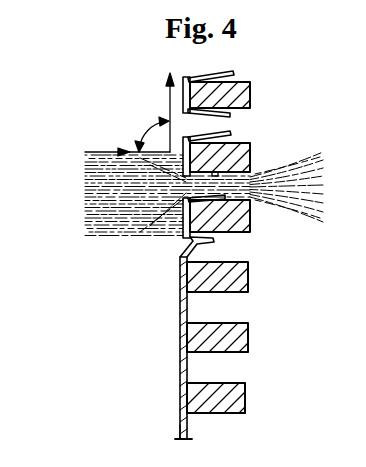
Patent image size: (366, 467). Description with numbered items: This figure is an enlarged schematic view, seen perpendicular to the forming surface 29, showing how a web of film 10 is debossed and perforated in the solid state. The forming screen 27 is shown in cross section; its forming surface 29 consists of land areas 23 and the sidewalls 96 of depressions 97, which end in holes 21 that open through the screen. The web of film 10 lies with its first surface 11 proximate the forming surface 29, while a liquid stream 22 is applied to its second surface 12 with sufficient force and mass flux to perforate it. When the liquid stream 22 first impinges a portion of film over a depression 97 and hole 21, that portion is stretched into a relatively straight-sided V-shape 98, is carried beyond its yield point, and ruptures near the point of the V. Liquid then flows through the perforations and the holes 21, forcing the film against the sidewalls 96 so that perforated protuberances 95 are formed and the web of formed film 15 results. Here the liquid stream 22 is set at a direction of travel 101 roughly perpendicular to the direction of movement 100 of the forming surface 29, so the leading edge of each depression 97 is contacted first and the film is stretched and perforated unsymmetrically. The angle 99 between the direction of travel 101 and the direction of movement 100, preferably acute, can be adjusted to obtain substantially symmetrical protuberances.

The web of film 10 is at (178, 427).
The first surface 11 is at (190, 437).
The second surface 12 is at (185, 412).
The web of formed film 15 is at (182, 78).
The holes 21 is at (247, 307).
The liquid stream 22 is at (107, 190).
The land areas 23 is at (184, 389).
The forming screen 27 is at (226, 415).
The forming surface 29 is at (213, 352).
The perforated protuberances 95 is at (230, 133).
The sidewalls 96 is at (236, 377).
The depressions 97 is at (230, 366).
The V-shape 98 is at (210, 241).
The angle 99 is at (152, 130).
The direction of movement 100 is at (168, 95).
The direction of travel 101 is at (100, 151).